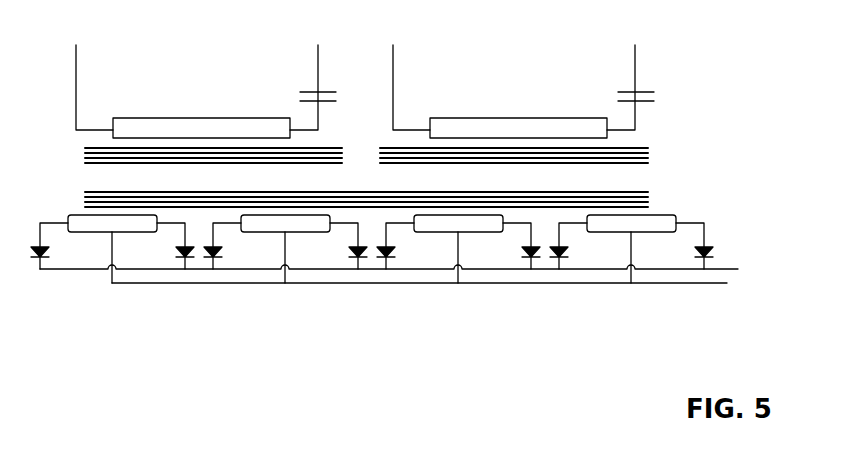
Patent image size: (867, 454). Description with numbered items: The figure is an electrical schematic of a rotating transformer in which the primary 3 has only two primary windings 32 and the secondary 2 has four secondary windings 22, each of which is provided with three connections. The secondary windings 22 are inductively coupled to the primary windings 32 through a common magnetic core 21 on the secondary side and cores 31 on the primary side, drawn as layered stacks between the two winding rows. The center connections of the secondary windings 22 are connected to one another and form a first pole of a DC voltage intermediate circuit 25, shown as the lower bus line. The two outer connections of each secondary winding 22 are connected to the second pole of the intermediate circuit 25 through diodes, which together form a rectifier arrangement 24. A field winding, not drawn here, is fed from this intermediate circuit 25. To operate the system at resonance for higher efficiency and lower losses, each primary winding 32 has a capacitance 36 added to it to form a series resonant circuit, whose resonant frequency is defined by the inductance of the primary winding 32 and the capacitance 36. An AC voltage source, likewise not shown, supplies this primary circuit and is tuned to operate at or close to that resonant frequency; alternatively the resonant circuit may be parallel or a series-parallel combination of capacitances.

The secondary 2 is at (704, 208).
The primary 3 is at (704, 90).
The common magnetic core 21 is at (85, 194).
The secondary winding 22 is at (656, 222).
The rectifier arrangement 24 is at (726, 249).
The DC voltage intermediate circuit 25 is at (738, 258).
The core 31 is at (84, 160).
The primary winding 32 is at (133, 129).
The capacitance 36 is at (324, 100).